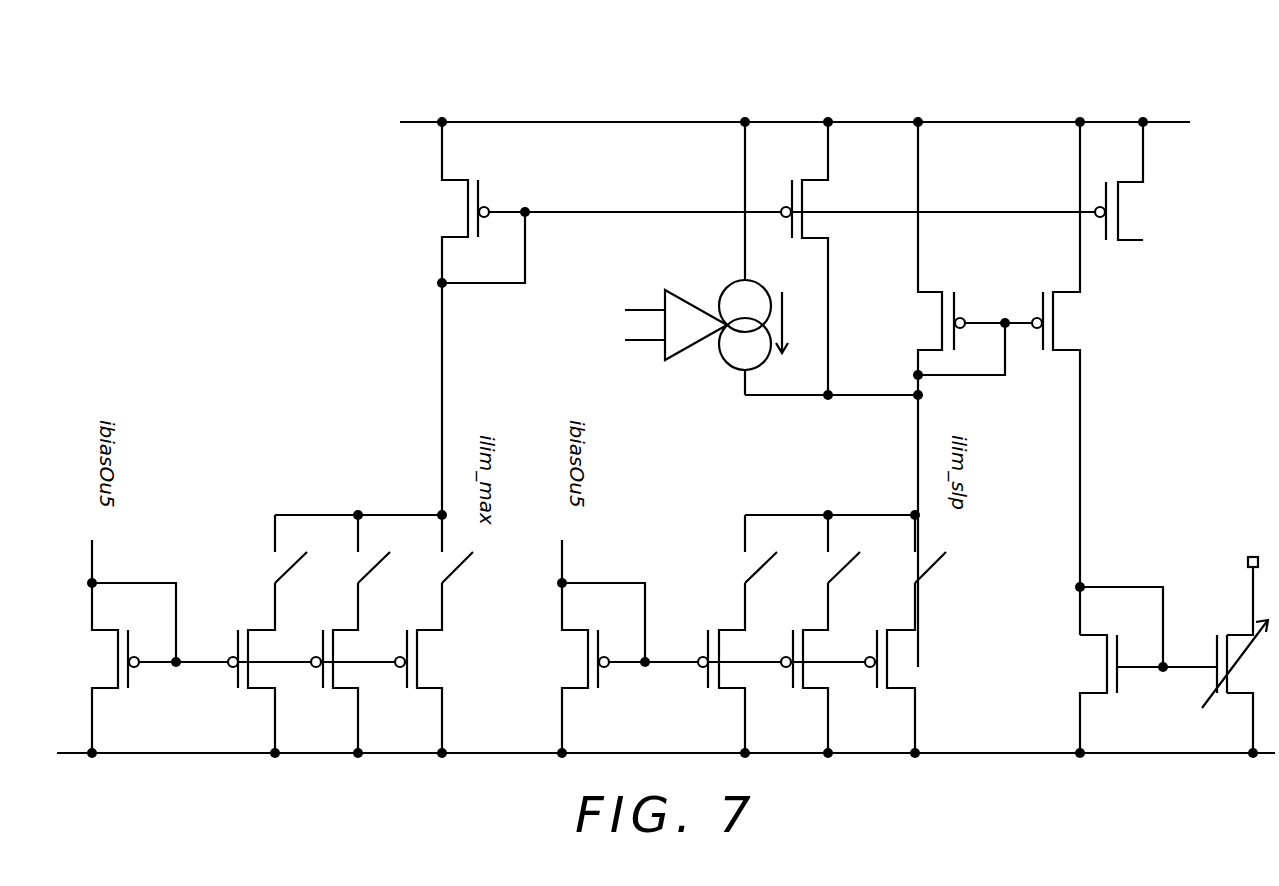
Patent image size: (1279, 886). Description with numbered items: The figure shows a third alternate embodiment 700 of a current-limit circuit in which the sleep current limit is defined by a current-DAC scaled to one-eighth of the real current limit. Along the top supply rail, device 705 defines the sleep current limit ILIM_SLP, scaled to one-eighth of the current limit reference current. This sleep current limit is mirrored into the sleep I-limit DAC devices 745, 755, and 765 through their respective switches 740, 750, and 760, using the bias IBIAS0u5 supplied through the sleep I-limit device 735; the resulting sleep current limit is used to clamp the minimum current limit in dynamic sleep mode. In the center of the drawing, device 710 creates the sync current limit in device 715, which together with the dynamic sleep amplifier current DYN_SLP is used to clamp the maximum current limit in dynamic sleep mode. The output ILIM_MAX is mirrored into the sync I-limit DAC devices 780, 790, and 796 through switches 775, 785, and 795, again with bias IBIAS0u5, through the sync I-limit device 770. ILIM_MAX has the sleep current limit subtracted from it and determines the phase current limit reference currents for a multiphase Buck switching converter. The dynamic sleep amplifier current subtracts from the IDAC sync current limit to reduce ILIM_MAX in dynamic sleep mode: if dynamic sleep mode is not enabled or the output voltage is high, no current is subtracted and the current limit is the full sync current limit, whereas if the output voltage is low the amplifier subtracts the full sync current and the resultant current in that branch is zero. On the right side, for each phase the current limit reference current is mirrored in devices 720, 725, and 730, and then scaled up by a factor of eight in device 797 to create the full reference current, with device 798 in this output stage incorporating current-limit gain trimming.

The third alternate embodiment circuit 700 is at (522, 80).
The device 705 is at (488, 190).
The device 710 is at (843, 190).
The device 715 is at (792, 322).
The mirror device 720 is at (965, 302).
The mirror device 725 is at (1163, 192).
The mirror device 730 is at (1100, 302).
The sleep I-limit device 735 is at (110, 693).
The switch 740 is at (275, 572).
The sleep I-limit DAC device 745 is at (283, 678).
The switch 750 is at (358, 573).
The sleep I-limit DAC device 755 is at (365, 678).
The switch 760 is at (443, 573).
The sleep I-limit DAC device 765 is at (448, 678).
The sync I-limit device 770 is at (580, 693).
The switch 775 is at (745, 572).
The sync I-limit DAC device 780 is at (753, 678).
The switch 785 is at (828, 573).
The sync I-limit DAC device 790 is at (835, 678).
The switch 795 is at (913, 573).
The sync I-limit DAC device 796 is at (918, 678).
The device 797 is at (1097, 698).
The device 798 is at (1233, 625).